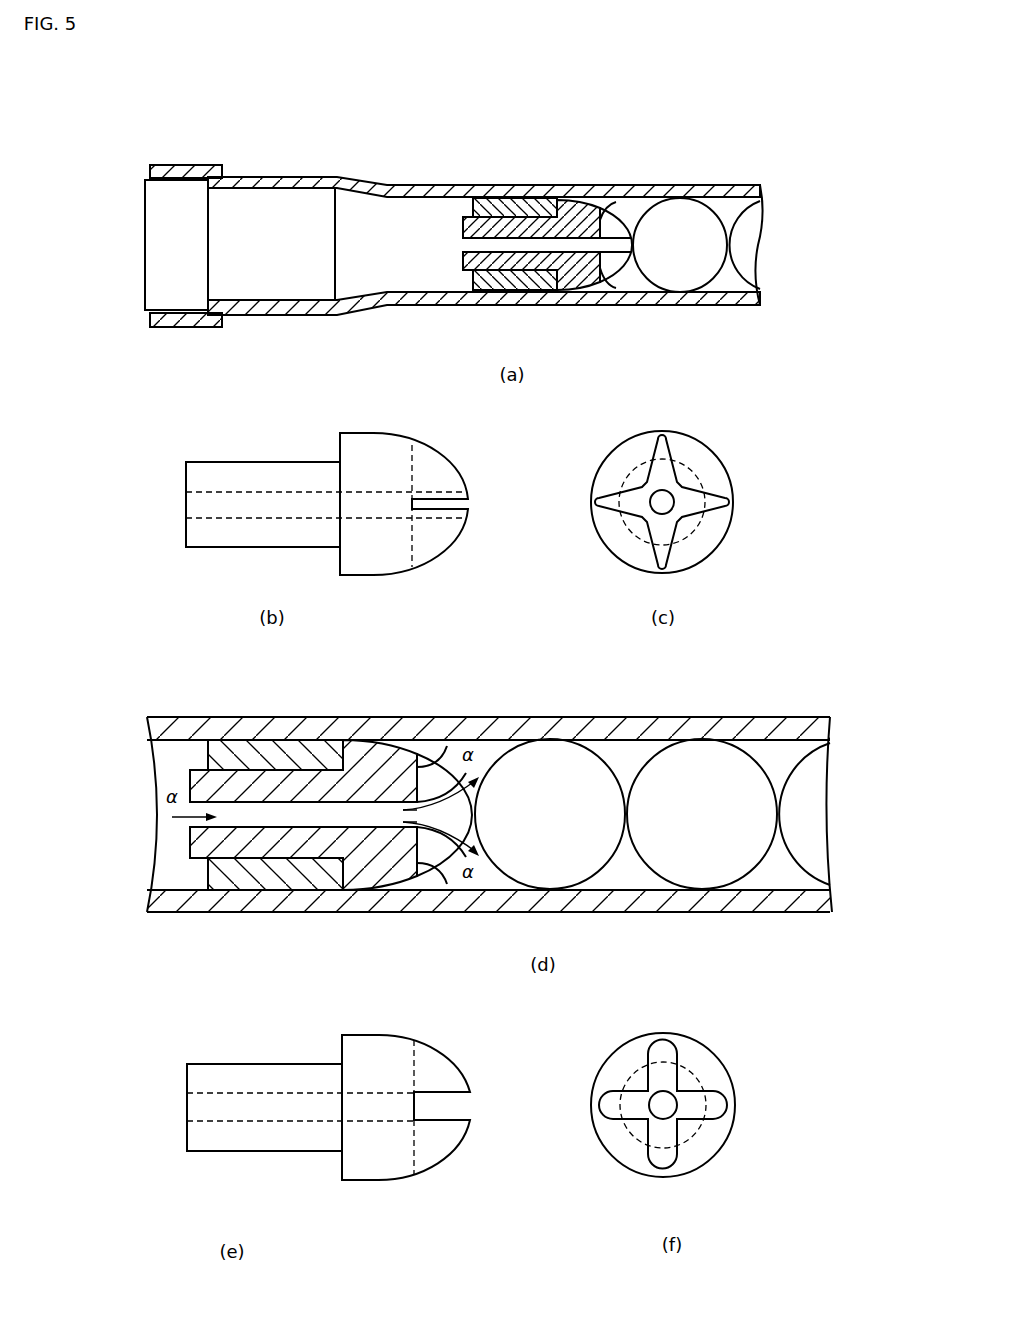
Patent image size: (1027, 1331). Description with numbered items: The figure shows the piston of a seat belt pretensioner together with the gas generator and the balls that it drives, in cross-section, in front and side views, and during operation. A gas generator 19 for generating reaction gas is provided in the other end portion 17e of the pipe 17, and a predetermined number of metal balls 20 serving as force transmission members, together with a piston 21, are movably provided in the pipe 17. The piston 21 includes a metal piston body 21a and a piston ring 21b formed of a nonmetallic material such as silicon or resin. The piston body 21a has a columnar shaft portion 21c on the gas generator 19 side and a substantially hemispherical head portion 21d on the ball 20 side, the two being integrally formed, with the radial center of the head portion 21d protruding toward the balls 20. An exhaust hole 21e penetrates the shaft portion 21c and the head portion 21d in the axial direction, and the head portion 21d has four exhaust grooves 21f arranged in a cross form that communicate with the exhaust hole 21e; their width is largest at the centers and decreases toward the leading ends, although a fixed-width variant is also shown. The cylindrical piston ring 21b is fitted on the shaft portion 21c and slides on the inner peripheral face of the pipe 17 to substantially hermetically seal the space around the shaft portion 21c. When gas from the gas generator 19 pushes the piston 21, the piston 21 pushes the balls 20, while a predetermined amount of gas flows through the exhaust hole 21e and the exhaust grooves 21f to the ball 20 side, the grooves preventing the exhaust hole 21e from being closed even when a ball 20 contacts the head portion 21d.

The pipe 17 is at (422, 182).
The other end portion of the pipe 17e is at (272, 177).
The gas generator 19 is at (278, 283).
The balls 20 is at (750, 215).
The piston 21 is at (585, 119).
The piston body 21a is at (565, 207).
The piston ring 21b is at (490, 205).
The shaft portion 21c is at (252, 465).
The head portion 21d is at (365, 440).
The exhaust hole 21e is at (497, 250).
The exhaust grooves 21f is at (628, 226).